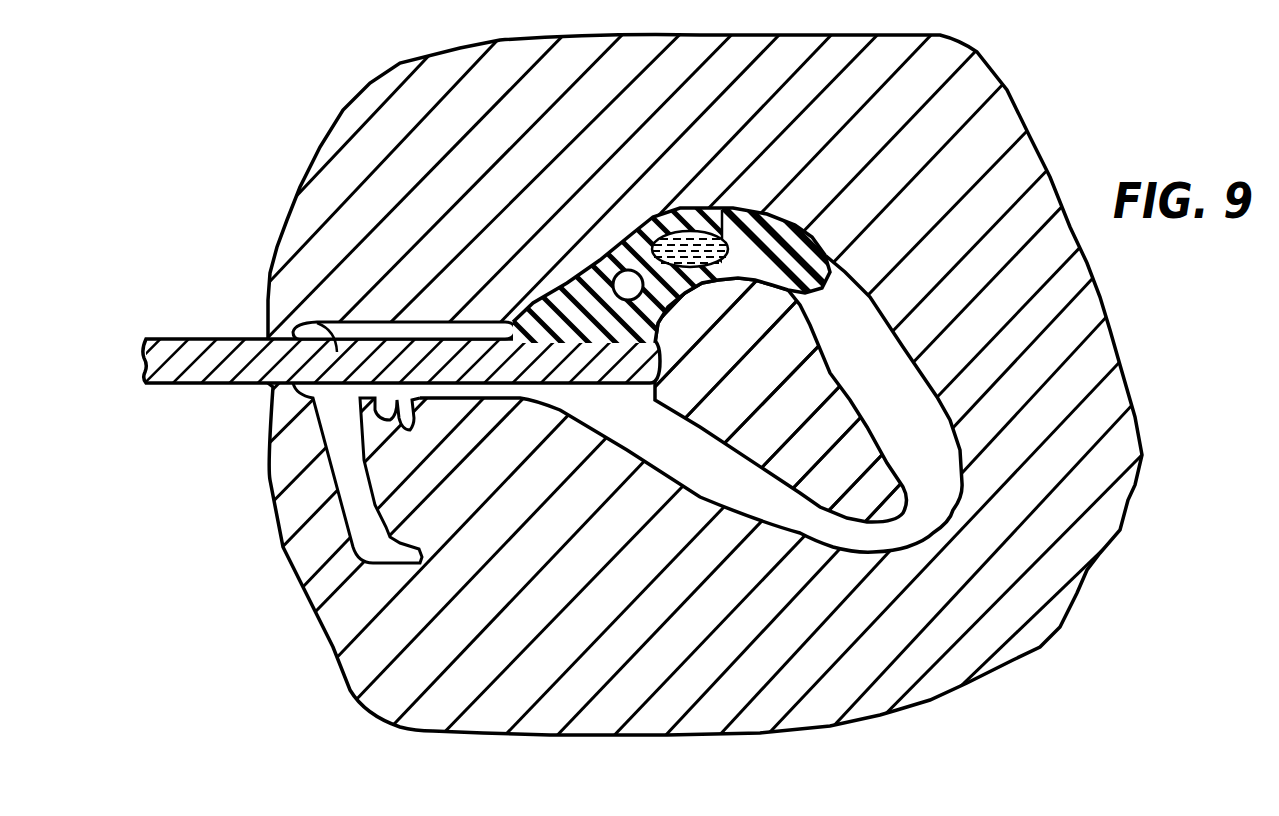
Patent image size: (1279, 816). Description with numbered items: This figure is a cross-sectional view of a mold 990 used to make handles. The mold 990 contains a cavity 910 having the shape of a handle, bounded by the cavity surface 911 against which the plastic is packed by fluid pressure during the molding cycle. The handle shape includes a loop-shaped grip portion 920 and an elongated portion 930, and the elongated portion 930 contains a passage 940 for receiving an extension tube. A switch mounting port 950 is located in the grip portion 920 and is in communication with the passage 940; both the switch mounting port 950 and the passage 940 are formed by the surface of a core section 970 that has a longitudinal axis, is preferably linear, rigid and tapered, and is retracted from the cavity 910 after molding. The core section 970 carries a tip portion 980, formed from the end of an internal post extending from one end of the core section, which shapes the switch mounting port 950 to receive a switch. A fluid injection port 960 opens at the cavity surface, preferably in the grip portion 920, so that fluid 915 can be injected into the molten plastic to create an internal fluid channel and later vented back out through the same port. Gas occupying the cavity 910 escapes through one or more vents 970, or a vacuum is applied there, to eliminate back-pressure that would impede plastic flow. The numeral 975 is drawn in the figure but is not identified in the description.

The cavity 910 is at (688, 456).
The cavity surface 911 is at (908, 310).
The fluid 915 is at (723, 208).
The loop-shaped grip portion 920 is at (828, 252).
The elongated portion 930 is at (298, 394).
The passage 940 is at (514, 388).
The switch mounting port 950 is at (655, 367).
The fluid injection port 960 is at (650, 310).
The vent 970 is at (293, 322).
The loop end 975 is at (889, 455).
The tip portion 980 is at (586, 386).
The mold 990 is at (333, 650).